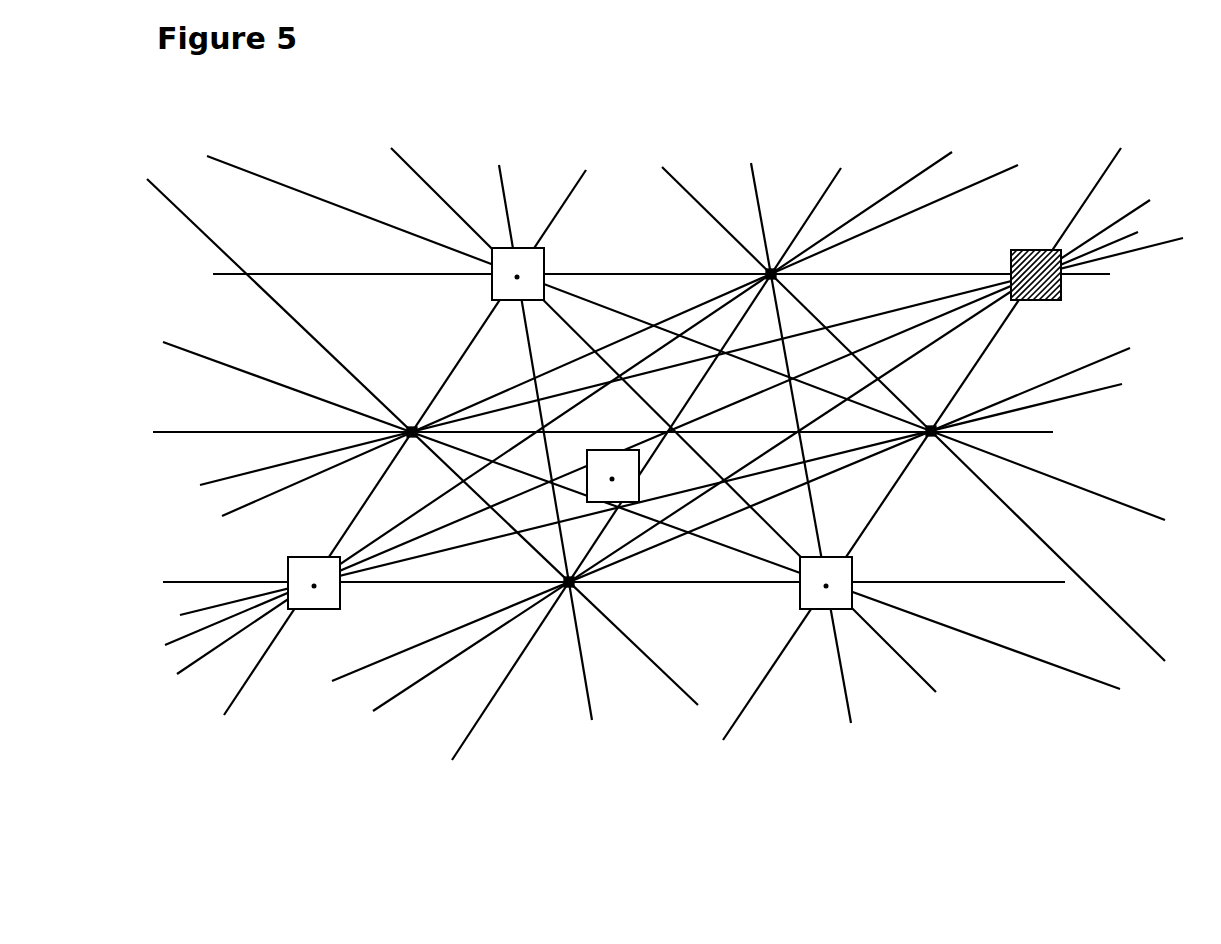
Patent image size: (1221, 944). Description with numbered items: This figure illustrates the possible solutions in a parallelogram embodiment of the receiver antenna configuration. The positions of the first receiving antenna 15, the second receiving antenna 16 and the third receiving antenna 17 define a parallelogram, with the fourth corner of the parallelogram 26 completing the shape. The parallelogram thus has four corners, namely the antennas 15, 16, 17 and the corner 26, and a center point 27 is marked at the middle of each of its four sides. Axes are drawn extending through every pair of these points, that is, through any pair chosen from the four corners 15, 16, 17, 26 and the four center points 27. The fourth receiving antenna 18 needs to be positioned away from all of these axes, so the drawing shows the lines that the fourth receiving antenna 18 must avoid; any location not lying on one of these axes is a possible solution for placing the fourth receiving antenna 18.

The receiving antenna (RX1) 15 is at (546, 252).
The receiving antenna (RX2) 16 is at (288, 563).
The receiving antenna (RX3) 17 is at (855, 568).
The receiving antenna (RX4) 18 is at (617, 503).
The fourth corner of the parallelogram 26 is at (1031, 249).
The center point of a side of the parallelogram 27 is at (412, 428).